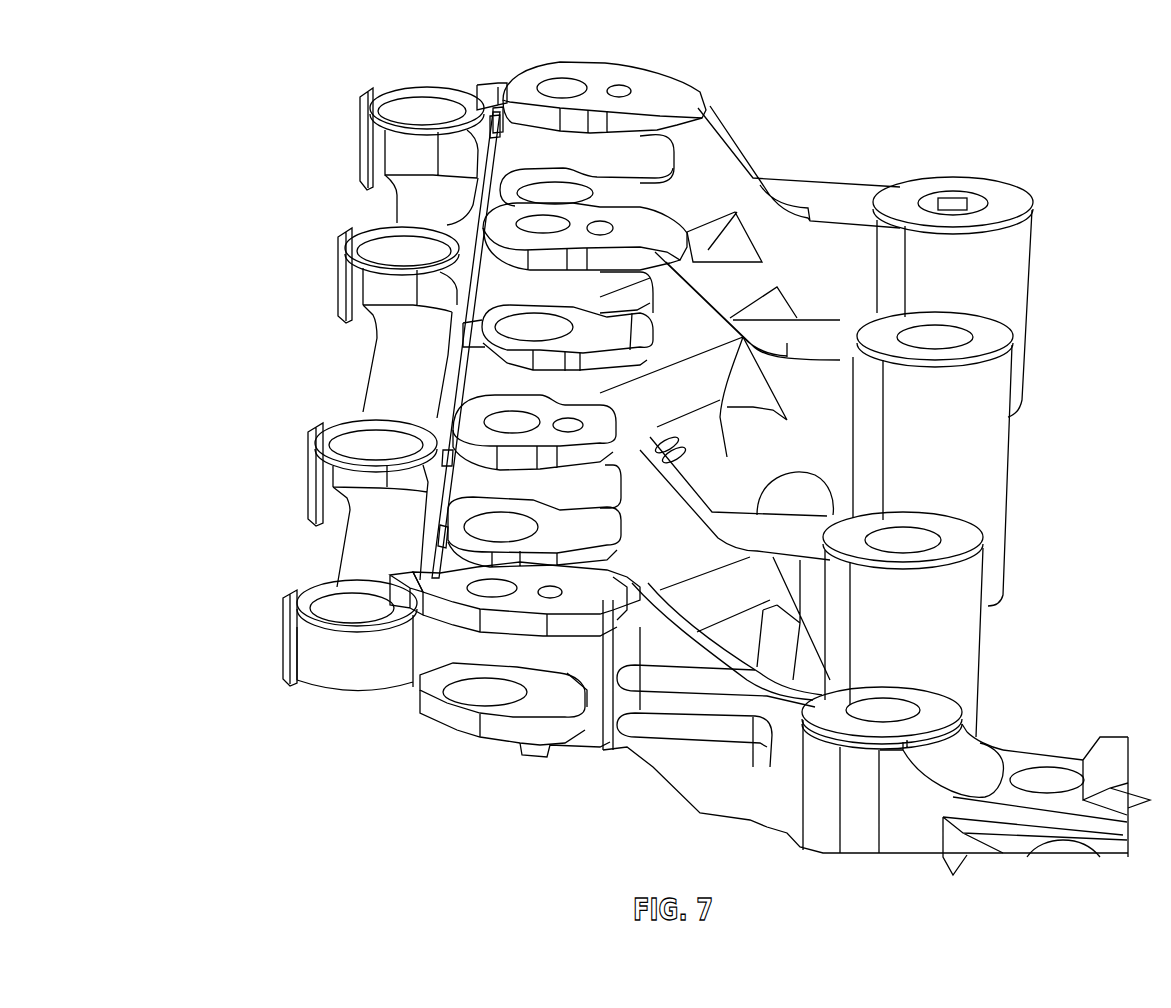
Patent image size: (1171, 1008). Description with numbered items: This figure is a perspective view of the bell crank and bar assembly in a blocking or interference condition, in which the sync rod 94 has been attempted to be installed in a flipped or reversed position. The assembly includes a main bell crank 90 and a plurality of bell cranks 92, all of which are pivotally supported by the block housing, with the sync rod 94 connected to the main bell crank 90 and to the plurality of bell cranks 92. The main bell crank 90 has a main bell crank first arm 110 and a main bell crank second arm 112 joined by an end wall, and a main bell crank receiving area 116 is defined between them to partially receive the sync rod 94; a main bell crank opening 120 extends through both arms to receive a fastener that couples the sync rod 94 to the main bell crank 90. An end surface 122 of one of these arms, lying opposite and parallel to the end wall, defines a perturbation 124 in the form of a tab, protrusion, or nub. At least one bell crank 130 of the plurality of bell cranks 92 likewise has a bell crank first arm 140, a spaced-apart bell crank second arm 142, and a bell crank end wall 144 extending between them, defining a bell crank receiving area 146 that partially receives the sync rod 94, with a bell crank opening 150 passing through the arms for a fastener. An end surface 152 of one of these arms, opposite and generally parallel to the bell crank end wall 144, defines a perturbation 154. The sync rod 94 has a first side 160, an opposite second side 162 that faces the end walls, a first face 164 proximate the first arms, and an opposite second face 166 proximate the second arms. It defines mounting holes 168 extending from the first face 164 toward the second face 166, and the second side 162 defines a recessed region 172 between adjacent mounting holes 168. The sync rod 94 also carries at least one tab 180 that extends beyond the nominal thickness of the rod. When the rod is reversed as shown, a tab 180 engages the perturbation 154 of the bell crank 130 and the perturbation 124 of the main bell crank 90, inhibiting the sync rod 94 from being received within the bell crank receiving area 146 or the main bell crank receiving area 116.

The main bell crank 90 is at (672, 794).
The plurality of bell cranks 92 is at (936, 119).
The sync rod 94 is at (303, 663).
The main bell crank first arm 110 is at (528, 552).
The main bell crank second arm 112 is at (568, 754).
The main bell crank receiving area 116 is at (563, 658).
The main bell crank opening 120 is at (510, 577).
The end surface 122 is at (400, 658).
The perturbation 124 is at (397, 568).
The bell crank 130 is at (741, 73).
The bell crank first arm 140 is at (615, 129).
The bell crank second arm 142 is at (560, 165).
The bell crank end wall 144 is at (655, 144).
The bell crank receiving area 146 is at (660, 148).
The bell crank opening 150 is at (612, 85).
The end surface 152 is at (505, 108).
The perturbation 154 is at (487, 73).
The first side 160 is at (462, 373).
The second side 162 is at (370, 373).
The first face 164 is at (333, 693).
The second face 166 is at (380, 350).
The mounting holes 168 is at (327, 603).
The recessed region 172 is at (333, 543).
The tab 180 is at (483, 117).